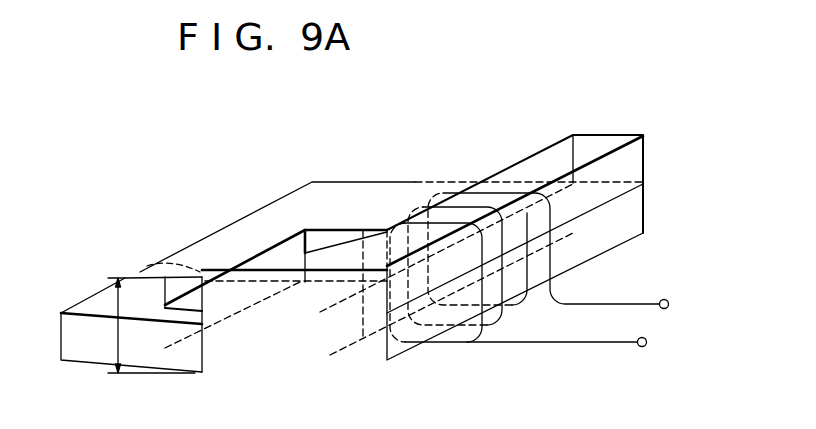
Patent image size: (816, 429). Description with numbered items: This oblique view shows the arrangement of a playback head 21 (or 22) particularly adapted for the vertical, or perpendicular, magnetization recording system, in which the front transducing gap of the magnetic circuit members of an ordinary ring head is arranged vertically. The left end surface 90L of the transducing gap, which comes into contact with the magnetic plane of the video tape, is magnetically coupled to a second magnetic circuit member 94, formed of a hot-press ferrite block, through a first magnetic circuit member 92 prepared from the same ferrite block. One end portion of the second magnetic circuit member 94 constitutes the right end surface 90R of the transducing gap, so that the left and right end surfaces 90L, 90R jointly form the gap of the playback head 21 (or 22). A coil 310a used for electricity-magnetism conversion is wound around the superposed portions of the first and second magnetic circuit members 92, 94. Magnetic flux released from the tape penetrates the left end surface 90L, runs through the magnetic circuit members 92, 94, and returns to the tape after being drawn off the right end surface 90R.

The playback head 21 is at (120, 145).
The playback head 22 is at (146, 247).
The left end surface 90L is at (207, 363).
The right end surface 90R is at (160, 268).
The first magnetic circuit member 92 is at (220, 247).
The second magnetic circuit member 94 is at (553, 157).
The coil 310a is at (480, 343).